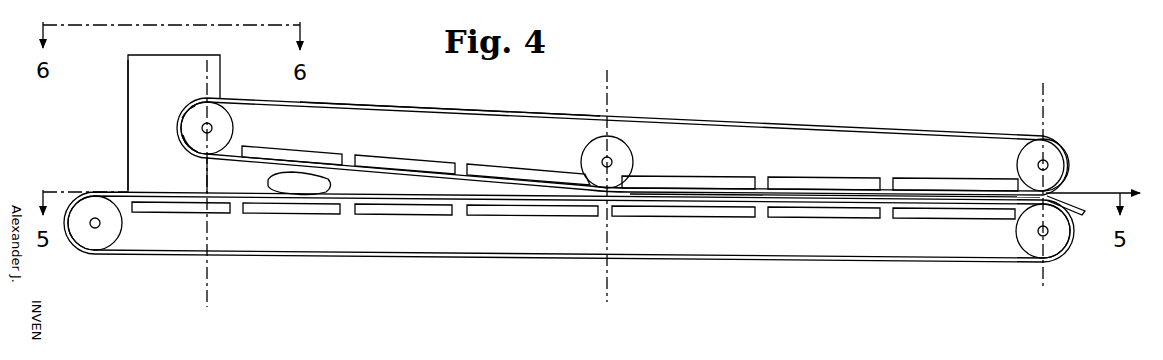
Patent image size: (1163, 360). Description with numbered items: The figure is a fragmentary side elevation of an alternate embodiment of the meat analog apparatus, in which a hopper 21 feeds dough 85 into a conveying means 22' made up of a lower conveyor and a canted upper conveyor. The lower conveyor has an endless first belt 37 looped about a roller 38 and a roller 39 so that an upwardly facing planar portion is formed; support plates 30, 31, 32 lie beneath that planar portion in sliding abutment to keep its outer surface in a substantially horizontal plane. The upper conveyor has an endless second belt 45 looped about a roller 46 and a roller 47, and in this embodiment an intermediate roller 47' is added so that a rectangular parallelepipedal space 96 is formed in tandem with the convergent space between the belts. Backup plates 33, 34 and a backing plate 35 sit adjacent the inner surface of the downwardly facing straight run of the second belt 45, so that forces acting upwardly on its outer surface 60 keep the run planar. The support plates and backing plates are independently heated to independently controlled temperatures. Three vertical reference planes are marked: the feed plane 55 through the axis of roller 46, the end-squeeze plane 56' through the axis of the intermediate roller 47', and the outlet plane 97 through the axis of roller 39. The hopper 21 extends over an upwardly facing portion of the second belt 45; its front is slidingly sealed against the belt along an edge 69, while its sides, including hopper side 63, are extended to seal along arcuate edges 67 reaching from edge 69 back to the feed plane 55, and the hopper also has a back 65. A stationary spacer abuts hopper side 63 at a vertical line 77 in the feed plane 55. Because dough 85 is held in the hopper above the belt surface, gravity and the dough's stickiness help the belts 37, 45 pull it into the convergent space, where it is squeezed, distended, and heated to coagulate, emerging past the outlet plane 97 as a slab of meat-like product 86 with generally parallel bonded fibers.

The hopper 21 is at (118, 110).
The conveying means 22' is at (390, 302).
The support plate 30 is at (183, 213).
The support plate 31 is at (400, 215).
The support plate 32 is at (668, 216).
The backup plate 33 is at (300, 147).
The backup plate 34 is at (405, 149).
The backing plate 35 is at (690, 175).
The first belt 37 is at (370, 259).
The roller 38 is at (85, 237).
The roller 39 is at (1018, 238).
The second belt 45 is at (708, 118).
The roller 46 is at (193, 138).
The roller 47 is at (1068, 165).
The intermediate roller 47' is at (631, 158).
The feed plane 55 is at (209, 278).
The end-squeeze plane 56' is at (633, 186).
The outer surface 60 is at (328, 104).
The hopper side 63 is at (146, 166).
The hopper back 65 is at (127, 145).
The arcuate edge 67 is at (190, 110).
The edge 69 is at (221, 99).
The vertical line 77 is at (209, 178).
The dough 85 is at (310, 184).
The meat-like product 86 is at (1080, 214).
The rectangular parallelepipedal space 96 is at (820, 197).
The outlet plane 97 is at (1045, 96).